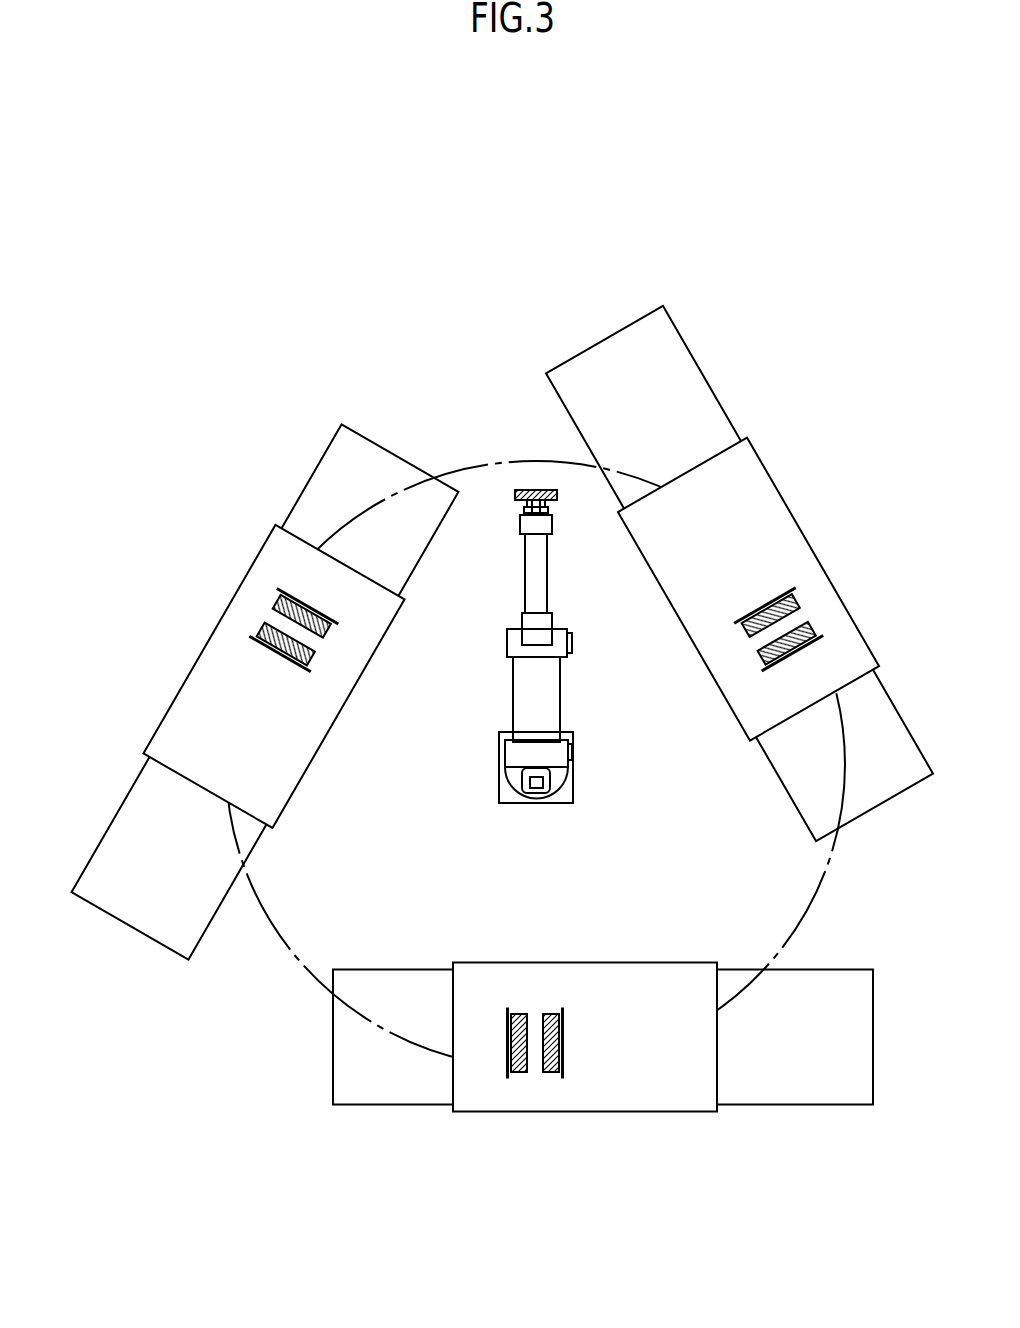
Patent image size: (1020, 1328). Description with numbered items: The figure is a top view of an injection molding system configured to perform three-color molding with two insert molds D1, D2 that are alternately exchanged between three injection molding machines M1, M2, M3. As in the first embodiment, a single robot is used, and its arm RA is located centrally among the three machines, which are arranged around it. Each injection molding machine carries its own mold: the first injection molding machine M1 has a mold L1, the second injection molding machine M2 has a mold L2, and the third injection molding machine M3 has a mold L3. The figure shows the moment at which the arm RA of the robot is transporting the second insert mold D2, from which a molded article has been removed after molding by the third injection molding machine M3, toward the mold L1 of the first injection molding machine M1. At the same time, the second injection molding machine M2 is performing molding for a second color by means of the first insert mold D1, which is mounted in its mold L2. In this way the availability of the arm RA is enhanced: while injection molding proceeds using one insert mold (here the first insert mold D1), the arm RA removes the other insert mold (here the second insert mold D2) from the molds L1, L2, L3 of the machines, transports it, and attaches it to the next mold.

The arm of the robot RA is at (481, 609).
The second insert mold D2 is at (547, 490).
The first insert mold D1 is at (527, 1053).
The first injection molding machine M1 is at (693, 355).
The second injection molding machine M2 is at (387, 1104).
The third injection molding machine M3 is at (328, 447).
The mold of the first injection molding machine L1 is at (742, 636).
The mold of the second injection molding machine L2 is at (544, 1008).
The mold of the third injection molding machine L3 is at (313, 660).